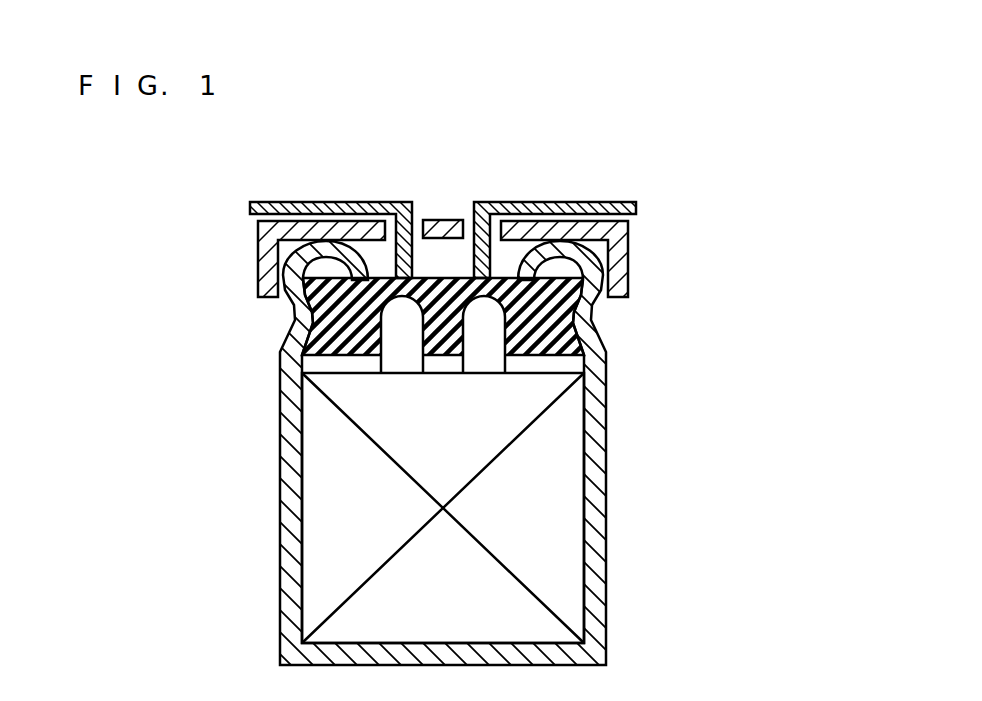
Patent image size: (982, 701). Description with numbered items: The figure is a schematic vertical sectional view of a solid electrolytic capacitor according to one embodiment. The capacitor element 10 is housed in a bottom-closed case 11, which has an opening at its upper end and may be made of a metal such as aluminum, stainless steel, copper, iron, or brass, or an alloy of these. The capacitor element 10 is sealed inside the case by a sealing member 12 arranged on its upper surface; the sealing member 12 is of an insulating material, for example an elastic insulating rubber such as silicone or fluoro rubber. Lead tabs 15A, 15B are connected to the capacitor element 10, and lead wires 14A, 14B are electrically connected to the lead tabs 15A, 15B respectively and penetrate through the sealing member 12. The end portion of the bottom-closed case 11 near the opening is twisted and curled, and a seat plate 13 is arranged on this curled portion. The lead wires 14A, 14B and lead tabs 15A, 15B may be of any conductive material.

The capacitor element 10 is at (343, 492).
The bottom-closed case 11 is at (597, 453).
The sealing member 12 is at (567, 323).
The seat plate 13 is at (268, 247).
The lead wire 14A is at (328, 202).
The lead wire 14B is at (567, 202).
The lead tab 15A is at (402, 325).
The lead tab 15B is at (480, 346).